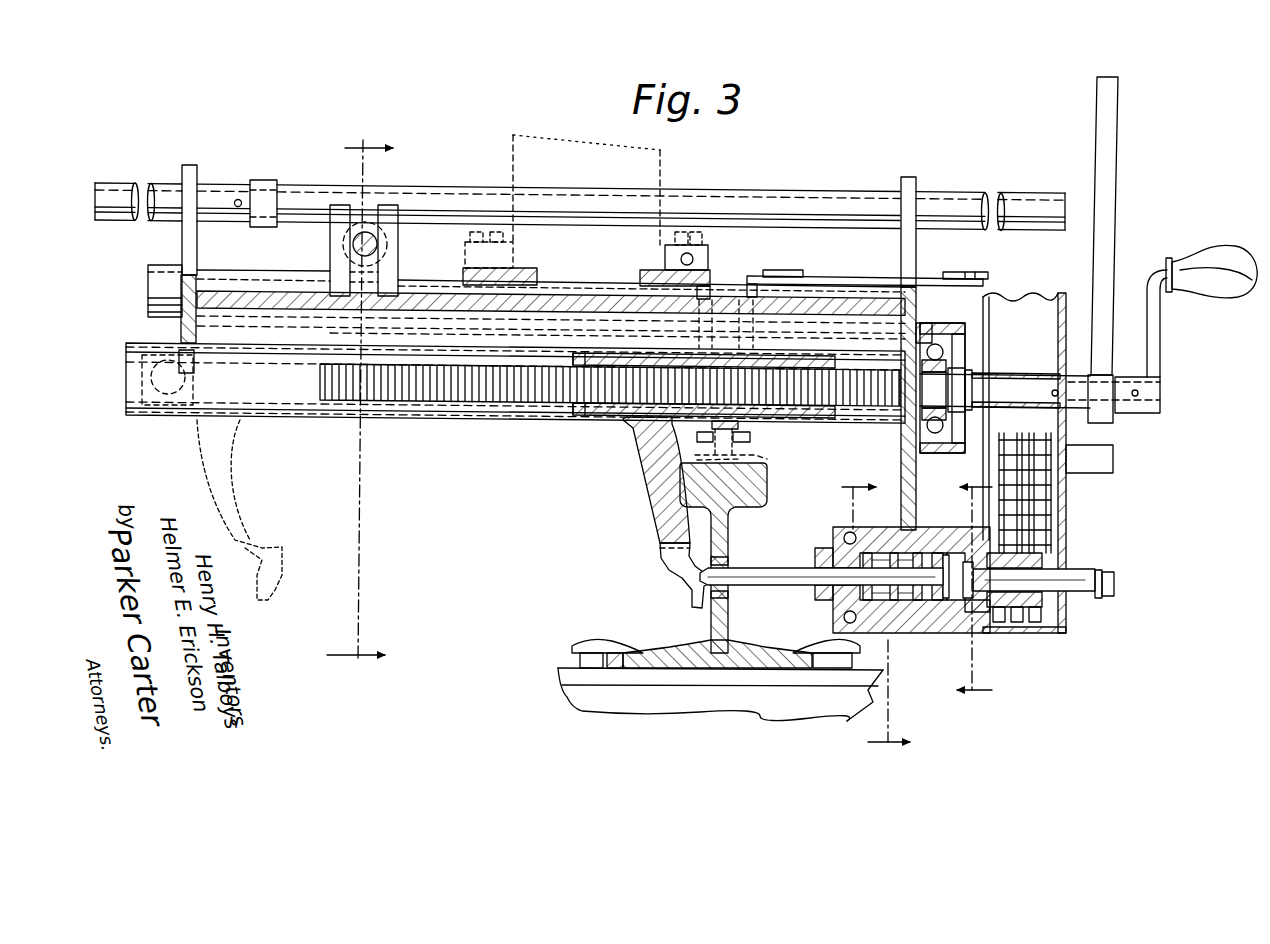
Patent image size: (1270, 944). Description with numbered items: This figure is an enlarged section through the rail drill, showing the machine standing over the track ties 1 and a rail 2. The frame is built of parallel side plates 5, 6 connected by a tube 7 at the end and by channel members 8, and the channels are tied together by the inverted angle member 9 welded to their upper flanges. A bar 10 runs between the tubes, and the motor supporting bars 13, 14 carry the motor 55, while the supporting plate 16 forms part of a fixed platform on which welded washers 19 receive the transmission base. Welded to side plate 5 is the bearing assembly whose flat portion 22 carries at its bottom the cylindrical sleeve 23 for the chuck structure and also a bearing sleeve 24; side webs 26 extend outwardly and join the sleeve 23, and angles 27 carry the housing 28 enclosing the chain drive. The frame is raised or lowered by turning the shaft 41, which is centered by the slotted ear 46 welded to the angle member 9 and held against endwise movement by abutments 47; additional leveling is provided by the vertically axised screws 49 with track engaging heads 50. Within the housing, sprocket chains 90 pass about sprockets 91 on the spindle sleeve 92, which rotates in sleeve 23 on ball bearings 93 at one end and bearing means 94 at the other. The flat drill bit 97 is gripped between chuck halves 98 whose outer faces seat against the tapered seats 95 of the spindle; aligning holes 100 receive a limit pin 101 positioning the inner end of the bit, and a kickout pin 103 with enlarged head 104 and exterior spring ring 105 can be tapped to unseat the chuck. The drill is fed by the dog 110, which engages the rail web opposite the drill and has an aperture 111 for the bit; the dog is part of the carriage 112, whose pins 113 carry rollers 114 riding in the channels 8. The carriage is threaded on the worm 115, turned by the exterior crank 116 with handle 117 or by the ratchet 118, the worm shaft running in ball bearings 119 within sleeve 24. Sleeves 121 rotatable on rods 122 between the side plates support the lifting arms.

The track ties 1 is at (605, 695).
The rails 2 is at (753, 485).
The side plate 5 is at (913, 291).
The side plate 6 is at (185, 241).
The tube 7 is at (160, 280).
The channel member 8 is at (425, 456).
The inverted angle member 9 is at (230, 297).
The bar 10 is at (974, 588).
The motor supporting bar 13 is at (530, 270).
The motor supporting bar 14 is at (656, 270).
The supporting bar or plate 16 is at (853, 277).
The washers 19 is at (778, 271).
The flat portion 22 is at (904, 466).
The cylindrical sleeve 23 is at (912, 634).
The bearing sleeve 24 is at (950, 448).
The side webs or walls 26 is at (985, 329).
The angles 27 is at (1118, 461).
The housing 28 is at (1066, 503).
The rod or shaft 41 is at (354, 243).
The slotted ear 46 is at (397, 251).
The abutments 47 is at (343, 250).
The vertically axised screws 49 is at (742, 429).
The track engaging heads 50 is at (752, 448).
The motor 55 is at (650, 154).
The sprocket chains 90 is at (1035, 448).
The sprockets 91 is at (1046, 566).
The sleeve or spindle 92 is at (950, 616).
The ball bearings 93 is at (850, 534).
The bearing means 94 is at (975, 616).
The tapered seats 95 is at (896, 545).
The flat drill bit 97 is at (750, 569).
The chuck halves 98 is at (820, 552).
The aligning holes 100 is at (866, 553).
The limit pin 101 is at (943, 553).
The kickout pin 103 is at (1088, 597).
The enlarged head 104 is at (962, 606).
The spring ring 105 is at (1098, 571).
The dog 110 is at (228, 476).
The aperture 111 is at (275, 563).
The carriage 112 is at (270, 416).
The pins 113 is at (142, 375).
The rollers 114 is at (160, 411).
The worm 115 is at (500, 400).
The crank 116 is at (1160, 341).
The handle 117 is at (1215, 292).
The ratchet 118 is at (1120, 229).
The ball bearings 119 is at (960, 353).
The sleeves 121 is at (262, 180).
The rods 122 is at (136, 190).